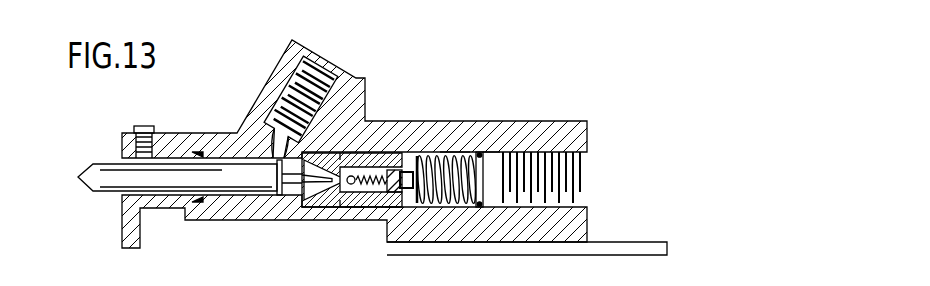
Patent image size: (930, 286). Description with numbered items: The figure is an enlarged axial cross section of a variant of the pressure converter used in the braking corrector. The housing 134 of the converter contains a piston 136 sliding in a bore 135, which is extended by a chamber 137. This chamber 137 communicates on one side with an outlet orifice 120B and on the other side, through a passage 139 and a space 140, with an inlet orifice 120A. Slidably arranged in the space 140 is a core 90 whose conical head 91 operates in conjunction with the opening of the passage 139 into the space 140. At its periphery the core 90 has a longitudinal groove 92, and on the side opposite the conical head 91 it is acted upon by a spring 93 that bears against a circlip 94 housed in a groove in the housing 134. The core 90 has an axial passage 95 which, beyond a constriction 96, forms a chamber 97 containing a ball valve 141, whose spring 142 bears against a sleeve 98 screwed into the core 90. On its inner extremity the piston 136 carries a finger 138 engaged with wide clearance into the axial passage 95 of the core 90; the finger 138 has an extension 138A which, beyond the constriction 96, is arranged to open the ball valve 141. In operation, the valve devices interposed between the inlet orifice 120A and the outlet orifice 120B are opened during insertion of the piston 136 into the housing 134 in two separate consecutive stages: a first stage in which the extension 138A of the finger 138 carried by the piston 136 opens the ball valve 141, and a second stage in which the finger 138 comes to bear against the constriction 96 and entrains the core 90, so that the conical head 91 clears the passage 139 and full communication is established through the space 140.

The housing 134 is at (215, 222).
The bore 135 is at (215, 157).
The piston 136 is at (177, 175).
The chamber 137 is at (288, 198).
The finger 138 is at (274, 141).
The passage 139 is at (296, 200).
The outlet orifice 120B is at (337, 66).
The inlet orifice 120A is at (582, 198).
The constriction 96 is at (340, 165).
The axial passage 95 is at (340, 207).
The conical head 91 is at (312, 203).
The extension 138A is at (357, 208).
The ball valve 141 is at (354, 176).
The spring 142 is at (372, 178).
The core 90 is at (399, 170).
The longitudinal groove 92 is at (419, 160).
The chamber 97 is at (390, 208).
The sleeve 98 is at (413, 208).
The space 140 is at (454, 155).
The circlip 94 is at (480, 208).
The spring 93 is at (482, 153).